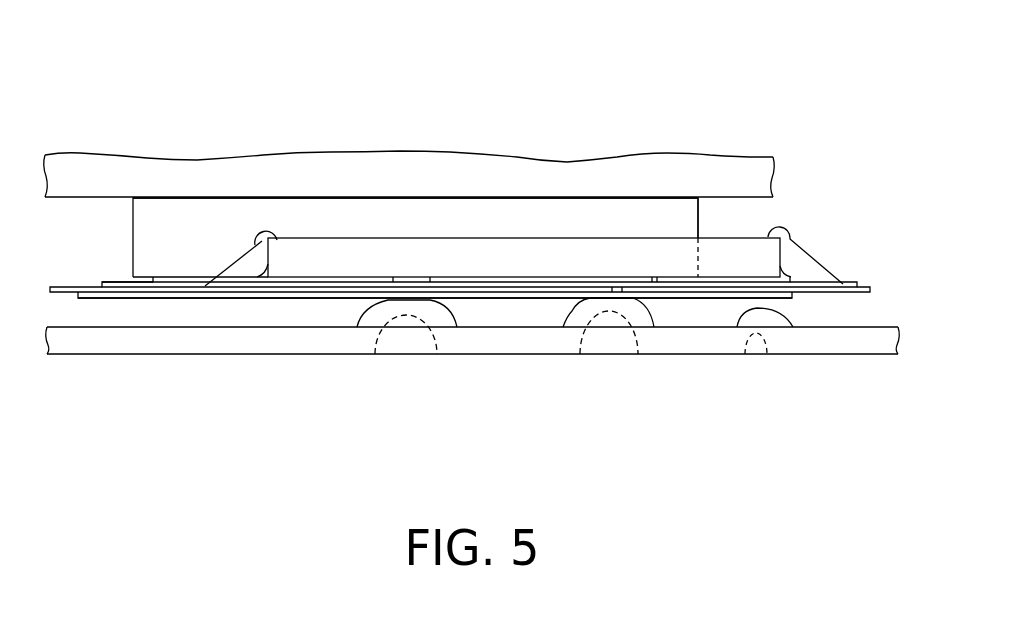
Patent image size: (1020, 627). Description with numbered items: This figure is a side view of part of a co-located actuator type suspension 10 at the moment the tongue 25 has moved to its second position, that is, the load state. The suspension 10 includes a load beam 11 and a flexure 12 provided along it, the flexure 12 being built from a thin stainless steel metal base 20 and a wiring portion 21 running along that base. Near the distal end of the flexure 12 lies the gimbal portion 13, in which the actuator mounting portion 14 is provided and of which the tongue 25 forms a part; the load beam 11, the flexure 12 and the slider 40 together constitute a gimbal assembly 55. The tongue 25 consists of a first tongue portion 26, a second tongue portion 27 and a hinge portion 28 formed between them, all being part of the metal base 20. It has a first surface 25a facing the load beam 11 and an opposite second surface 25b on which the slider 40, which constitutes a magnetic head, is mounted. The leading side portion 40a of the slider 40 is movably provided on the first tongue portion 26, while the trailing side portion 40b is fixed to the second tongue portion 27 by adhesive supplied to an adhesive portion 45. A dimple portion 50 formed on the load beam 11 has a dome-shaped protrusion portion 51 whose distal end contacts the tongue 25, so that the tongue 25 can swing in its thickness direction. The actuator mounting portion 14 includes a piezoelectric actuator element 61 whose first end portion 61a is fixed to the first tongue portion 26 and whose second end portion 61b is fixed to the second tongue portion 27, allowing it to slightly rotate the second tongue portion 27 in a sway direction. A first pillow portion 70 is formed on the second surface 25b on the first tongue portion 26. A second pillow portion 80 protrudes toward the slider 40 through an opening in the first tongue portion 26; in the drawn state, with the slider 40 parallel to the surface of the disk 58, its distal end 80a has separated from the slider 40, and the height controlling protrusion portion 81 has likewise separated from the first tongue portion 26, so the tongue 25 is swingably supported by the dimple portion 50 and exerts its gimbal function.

The suspension 10 is at (795, 150).
The load beam 11 is at (334, 340).
The flexure 12 is at (106, 247).
The gimbal portion 13 is at (579, 417).
The actuator mounting portion 14 is at (757, 226).
The metal base 20 is at (174, 299).
The wiring portion 21 is at (116, 283).
The tongue 25 is at (301, 302).
The first surface 25a is at (507, 298).
The second surface 25b is at (520, 298).
The first tongue portion 26 is at (701, 299).
The second tongue portion 27 is at (231, 299).
The hinge portion 28 is at (387, 277).
The slider 40 is at (307, 212).
The leading side portion 40a is at (687, 198).
The trailing side portion 40b is at (157, 197).
The adhesive portion 45 is at (192, 277).
The dimple portion 50 is at (402, 313).
The protrusion portion 51 is at (433, 299).
The gimbal assembly 55 is at (101, 388).
The disk 58 is at (492, 165).
The actuator element 61 is at (457, 250).
The first end portion 61a is at (782, 255).
The second end portion 61b is at (249, 240).
The first pillow portion 70 is at (670, 277).
The second pillow portion 80 is at (570, 312).
The distal end 80a is at (616, 290).
The height controlling protrusion portion 81 is at (777, 313).